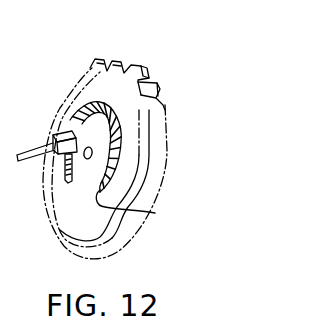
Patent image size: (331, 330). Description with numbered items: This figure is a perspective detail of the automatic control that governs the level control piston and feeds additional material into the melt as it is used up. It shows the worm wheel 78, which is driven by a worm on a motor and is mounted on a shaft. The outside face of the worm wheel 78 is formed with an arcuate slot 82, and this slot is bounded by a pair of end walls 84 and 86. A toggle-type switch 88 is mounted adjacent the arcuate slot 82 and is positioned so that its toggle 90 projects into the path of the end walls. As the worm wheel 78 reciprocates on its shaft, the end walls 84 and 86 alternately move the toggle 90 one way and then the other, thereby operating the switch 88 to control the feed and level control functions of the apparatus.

The worm wheel 78 is at (102, 87).
The arcuate slot 82 is at (92, 107).
The end wall 84 is at (135, 210).
The end wall 86 is at (72, 182).
The toggle-type switch 88 is at (54, 134).
The toggle 90 is at (55, 157).